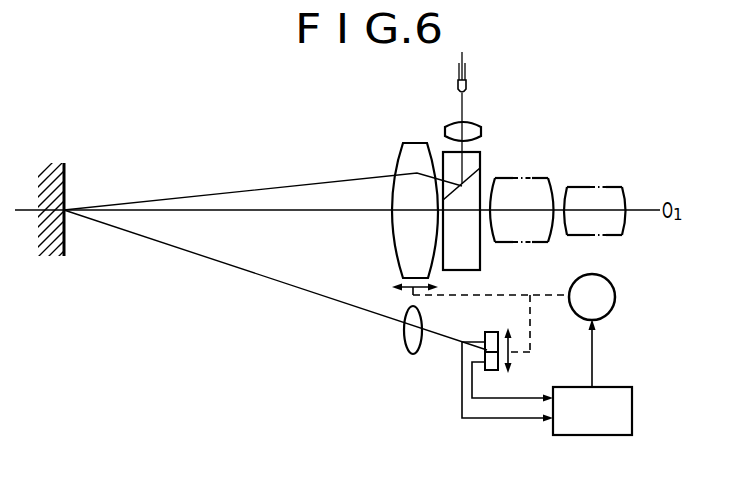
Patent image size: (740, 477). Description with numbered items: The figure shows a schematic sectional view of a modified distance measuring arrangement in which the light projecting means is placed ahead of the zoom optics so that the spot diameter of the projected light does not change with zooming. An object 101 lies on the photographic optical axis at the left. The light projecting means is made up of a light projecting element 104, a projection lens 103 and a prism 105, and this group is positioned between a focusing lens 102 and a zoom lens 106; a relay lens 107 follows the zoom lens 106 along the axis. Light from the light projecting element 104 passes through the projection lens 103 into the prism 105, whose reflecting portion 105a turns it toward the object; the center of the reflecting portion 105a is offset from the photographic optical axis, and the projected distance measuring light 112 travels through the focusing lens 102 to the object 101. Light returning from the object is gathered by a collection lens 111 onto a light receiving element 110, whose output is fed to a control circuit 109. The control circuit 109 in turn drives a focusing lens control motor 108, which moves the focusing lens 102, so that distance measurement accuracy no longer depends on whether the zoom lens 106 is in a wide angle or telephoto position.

The object surface / reflecting wall 101 is at (64, 183).
The focusing lens 102 is at (402, 152).
The projection lens 103 is at (470, 127).
The light projecting element 104 is at (468, 88).
The prism 105 is at (448, 152).
The reflecting portion 105a is at (478, 168).
The zoom lens 106 is at (513, 178).
The relay lens 107 is at (585, 187).
The focusing lens control motor 108 is at (613, 283).
The control circuit 109 is at (610, 387).
The light receiving element 110 is at (493, 371).
The collection lens 111 is at (413, 354).
The light ray 112 is at (302, 187).